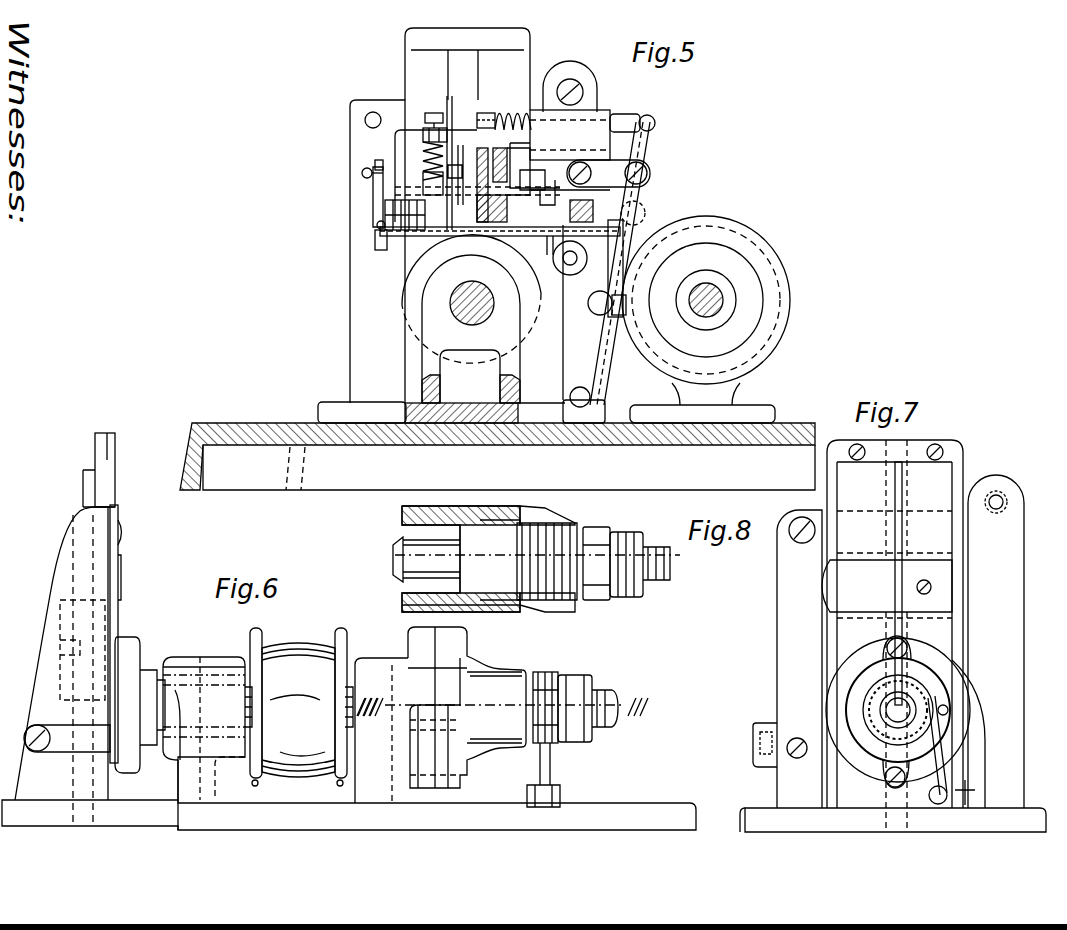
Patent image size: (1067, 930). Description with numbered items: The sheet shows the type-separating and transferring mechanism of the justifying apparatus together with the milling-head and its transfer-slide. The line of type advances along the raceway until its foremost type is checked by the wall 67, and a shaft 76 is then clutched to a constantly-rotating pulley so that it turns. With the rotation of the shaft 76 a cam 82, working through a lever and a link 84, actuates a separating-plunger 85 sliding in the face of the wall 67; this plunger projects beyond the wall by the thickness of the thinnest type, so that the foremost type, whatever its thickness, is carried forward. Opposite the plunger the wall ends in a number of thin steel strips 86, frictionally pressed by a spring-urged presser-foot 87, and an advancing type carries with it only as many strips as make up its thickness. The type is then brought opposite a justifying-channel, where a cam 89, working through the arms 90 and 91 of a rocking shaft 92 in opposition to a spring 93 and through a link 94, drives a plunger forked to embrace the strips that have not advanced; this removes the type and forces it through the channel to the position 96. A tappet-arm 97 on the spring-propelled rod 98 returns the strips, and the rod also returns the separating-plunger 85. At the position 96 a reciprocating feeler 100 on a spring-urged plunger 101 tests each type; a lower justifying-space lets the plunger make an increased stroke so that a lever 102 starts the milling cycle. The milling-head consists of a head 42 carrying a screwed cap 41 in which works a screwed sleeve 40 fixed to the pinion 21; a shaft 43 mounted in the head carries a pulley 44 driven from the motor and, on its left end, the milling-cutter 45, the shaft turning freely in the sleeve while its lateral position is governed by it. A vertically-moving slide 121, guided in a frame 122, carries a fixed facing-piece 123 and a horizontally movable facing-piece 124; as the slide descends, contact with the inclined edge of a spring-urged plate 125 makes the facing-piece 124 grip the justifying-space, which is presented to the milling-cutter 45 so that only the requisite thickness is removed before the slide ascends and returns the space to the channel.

In FIG. 8, the pinion 21 is at (625, 600).
In FIG. 6, the pinion 21 is at (574, 686).
In FIG. 8, the screwed sleeve 40 is at (596, 535).
In FIG. 6, the screwed sleeve 40 is at (536, 672).
In FIG. 8, the screwed cap 41 is at (540, 520).
In FIG. 6, the screwed cap 41 is at (467, 707).
In FIG. 6, the head 42 is at (378, 662).
In FIG. 8, the shaft 43 is at (405, 560).
In FIG. 6, the pulley 44 is at (298, 710).
In FIG. 6, the milling-cutter 45 is at (135, 650).
In FIG. 5, the wall 67 is at (570, 110).
In FIG. 5, the shaft 76 is at (712, 318).
In FIG. 5, the cam 82 is at (712, 240).
In FIG. 5, the link 84 is at (608, 173).
In FIG. 5, the separating-plunger 85 is at (532, 180).
In FIG. 5, the thin steel strips 86 is at (430, 175).
In FIG. 5, the spring-urged presser-foot 87 is at (426, 112).
In FIG. 5, the cam 89 is at (740, 325).
In FIG. 5, the arm 90 is at (616, 275).
In FIG. 5, the arm 91 is at (452, 248).
In FIG. 5, the rocking shaft 92 is at (484, 300).
In FIG. 5, the spring 93 is at (568, 275).
In FIG. 5, the link 94 is at (480, 112).
In FIG. 5, the position 96 is at (420, 178).
In FIG. 5, the tappet-arm 97 is at (379, 248).
In FIG. 5, the spring-propelled rod 98 is at (375, 232).
In FIG. 5, the reciprocating feeler 100 is at (505, 100).
In FIG. 5, the spring-urged plunger 101 is at (640, 126).
In FIG. 5, the lever 102 is at (646, 150).
In FIG. 6, the vertically-moving slide 121 is at (112, 462).
In FIG. 7, the vertically-moving slide 121 is at (906, 636).
In FIG. 6, the frame 122 is at (62, 666).
In FIG. 7, the frame 122 is at (995, 641).
In FIG. 7, the facing-piece 123 is at (903, 572).
In FIG. 7, the facing-piece 124 is at (887, 586).
In FIG. 6, the spring-urged plate 125 is at (120, 545).
In FIG. 7, the spring-urged plate 125 is at (787, 659).